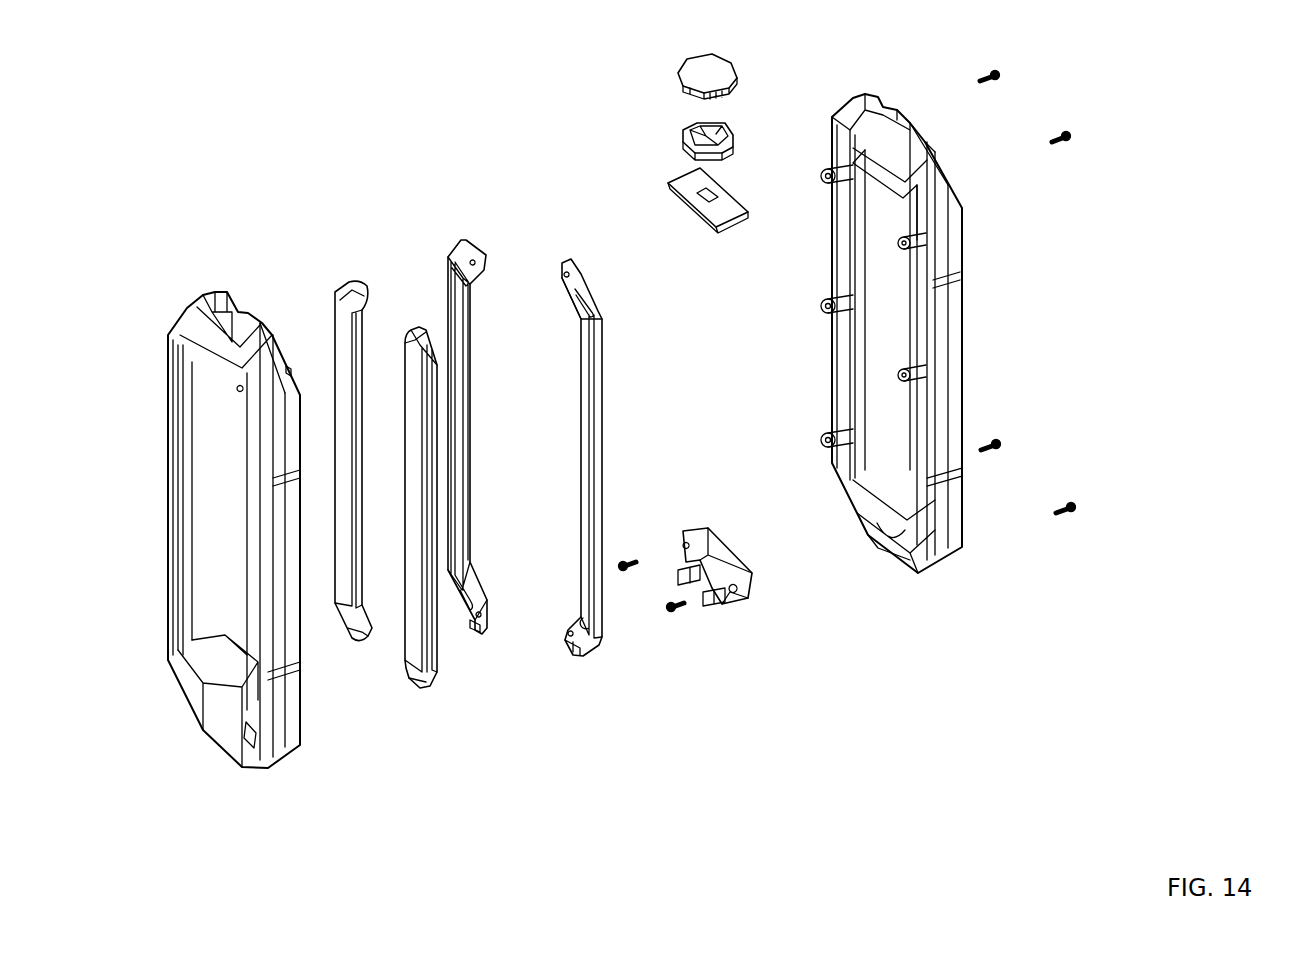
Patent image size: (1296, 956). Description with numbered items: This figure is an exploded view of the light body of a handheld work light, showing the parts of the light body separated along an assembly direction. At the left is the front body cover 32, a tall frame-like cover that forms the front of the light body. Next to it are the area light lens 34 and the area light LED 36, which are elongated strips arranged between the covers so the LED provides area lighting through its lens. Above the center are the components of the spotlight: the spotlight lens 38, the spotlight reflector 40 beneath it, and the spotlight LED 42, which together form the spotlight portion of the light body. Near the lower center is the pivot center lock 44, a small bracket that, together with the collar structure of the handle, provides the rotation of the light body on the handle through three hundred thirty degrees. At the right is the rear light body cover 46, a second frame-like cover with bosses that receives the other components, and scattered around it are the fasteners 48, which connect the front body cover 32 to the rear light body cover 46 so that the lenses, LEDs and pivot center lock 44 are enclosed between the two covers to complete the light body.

The front body cover 32 is at (208, 300).
The area light lens 34 is at (353, 283).
The area light LED 36 is at (463, 240).
The spotlight lens 38 is at (664, 76).
The spotlight reflector 40 is at (672, 136).
The spotlight LED 42 is at (660, 188).
The pivot center lock 44 is at (750, 595).
The rear light body cover 46 is at (930, 575).
The fasteners 48 is at (1075, 517).